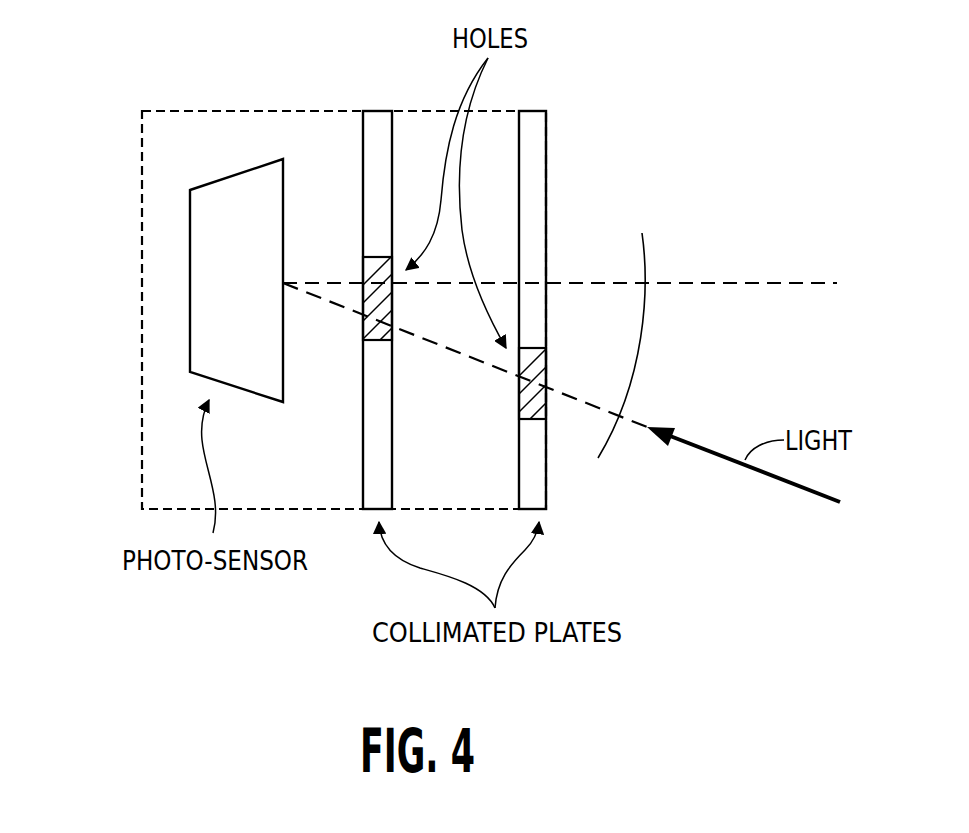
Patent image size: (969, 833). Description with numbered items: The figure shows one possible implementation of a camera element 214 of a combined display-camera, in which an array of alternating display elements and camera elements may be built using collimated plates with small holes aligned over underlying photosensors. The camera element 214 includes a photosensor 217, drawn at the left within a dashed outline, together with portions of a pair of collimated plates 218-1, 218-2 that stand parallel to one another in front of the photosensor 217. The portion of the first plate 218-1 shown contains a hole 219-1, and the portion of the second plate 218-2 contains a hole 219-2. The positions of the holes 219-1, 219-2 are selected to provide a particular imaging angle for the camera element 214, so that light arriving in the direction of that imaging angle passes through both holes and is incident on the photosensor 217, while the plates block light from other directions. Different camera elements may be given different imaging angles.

The camera element 214 is at (142, 171).
The photosensor 217 is at (190, 320).
The first collimated plate 218-1 is at (546, 140).
The second collimated plate 218-2 is at (363, 131).
The hole in first collimated plate 219-1 is at (590, 349).
The hole in second collimated plate 219-2 is at (363, 327).